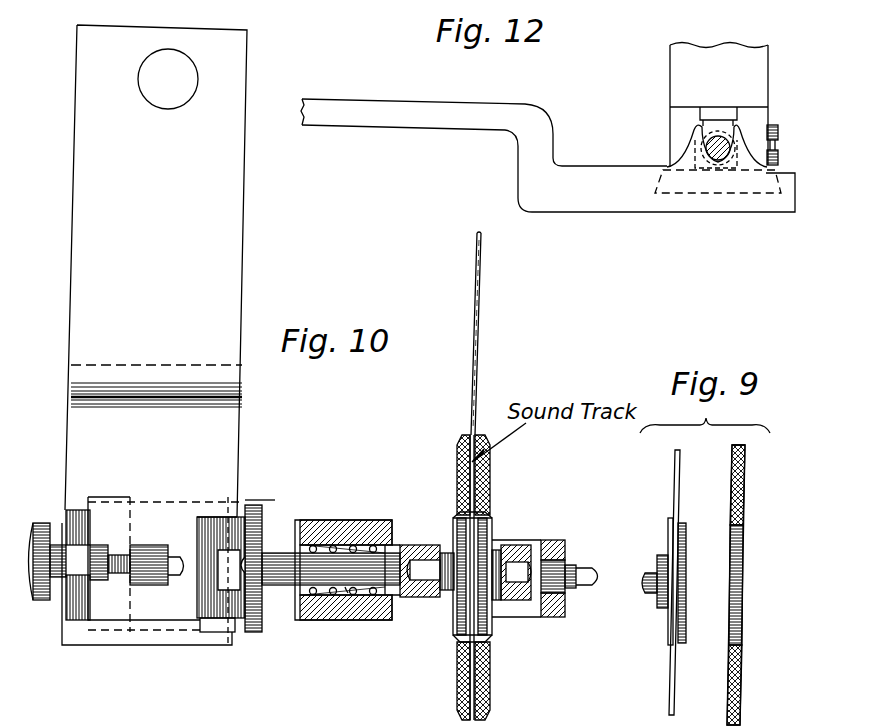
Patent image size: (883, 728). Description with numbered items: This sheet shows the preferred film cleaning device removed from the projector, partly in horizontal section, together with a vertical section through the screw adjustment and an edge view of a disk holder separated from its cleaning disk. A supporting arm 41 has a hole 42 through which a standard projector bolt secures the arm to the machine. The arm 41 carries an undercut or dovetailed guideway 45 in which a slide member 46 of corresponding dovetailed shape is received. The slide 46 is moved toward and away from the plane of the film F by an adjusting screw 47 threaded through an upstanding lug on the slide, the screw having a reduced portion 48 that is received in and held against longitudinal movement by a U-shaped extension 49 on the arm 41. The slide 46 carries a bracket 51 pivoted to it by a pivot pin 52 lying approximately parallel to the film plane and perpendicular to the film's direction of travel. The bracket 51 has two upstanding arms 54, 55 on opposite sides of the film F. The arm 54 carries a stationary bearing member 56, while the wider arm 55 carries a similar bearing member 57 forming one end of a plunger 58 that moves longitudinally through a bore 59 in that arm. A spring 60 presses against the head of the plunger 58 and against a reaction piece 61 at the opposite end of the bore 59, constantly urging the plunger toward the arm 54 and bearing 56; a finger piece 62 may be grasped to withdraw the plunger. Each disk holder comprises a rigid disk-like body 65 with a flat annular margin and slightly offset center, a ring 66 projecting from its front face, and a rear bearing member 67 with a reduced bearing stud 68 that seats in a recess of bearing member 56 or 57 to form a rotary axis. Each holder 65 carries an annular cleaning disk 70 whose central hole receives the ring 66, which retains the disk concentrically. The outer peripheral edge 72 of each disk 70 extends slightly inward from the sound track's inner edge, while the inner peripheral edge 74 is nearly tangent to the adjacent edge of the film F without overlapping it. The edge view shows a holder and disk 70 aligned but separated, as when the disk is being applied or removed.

In FIG. 10, the supporting arm 41 is at (240, 252).
In FIG. 12, the supporting arm 41 is at (573, 209).
In FIG. 10, the hole 42 is at (164, 109).
In FIG. 10, the guideway 45 is at (105, 522).
In FIG. 10, the slide member 46 is at (137, 598).
In FIG. 12, the slide member 46 is at (764, 191).
In FIG. 10, the adjusting screw 47 is at (118, 560).
In FIG. 10, the reduced portion 48 is at (66, 540).
In FIG. 12, the reduced portion 48 is at (719, 137).
In FIG. 10, the U-shaped extension 49 is at (70, 585).
In FIG. 12, the U-shaped extension 49 is at (690, 151).
In FIG. 10, the bracket 51 is at (300, 523).
In FIG. 12, the bracket 51 is at (681, 56).
In FIG. 10, the pivot pin 52 is at (198, 603).
In FIG. 12, the pivot pin 52 is at (778, 134).
In FIG. 10, the upstanding arm 54 is at (568, 547).
In FIG. 10, the upstanding arm 55 is at (345, 528).
In FIG. 10, the stationary bearing member 56 is at (545, 540).
In FIG. 10, the bearing member 57 is at (412, 545).
In FIG. 10, the plunger 58 is at (292, 605).
In FIG. 10, the bore 59 is at (369, 600).
In FIG. 10, the spring 60 is at (347, 612).
In FIG. 10, the reaction piece 61 is at (313, 600).
In FIG. 10, the finger piece 62 is at (263, 522).
In FIG. 10, the disk-like body 65 is at (455, 616).
In FIG. 9, the disk-like body 65 is at (674, 478).
In FIG. 10, the ring 66 is at (461, 633).
In FIG. 9, the ring 66 is at (689, 527).
In FIG. 10, the bearing member 67 is at (497, 549).
In FIG. 9, the bearing member 67 is at (661, 556).
In FIG. 10, the bearing stud 68 is at (515, 560).
In FIG. 9, the bearing stud 68 is at (650, 595).
In FIG. 10, the cleaning disk 70 is at (462, 682).
In FIG. 9, the cleaning disk 70 is at (748, 488).
In FIG. 9, the outer peripheral edge 72 is at (746, 447).
In FIG. 9, the inner peripheral edge 74 is at (746, 533).
In FIG. 10, the film F is at (483, 303).